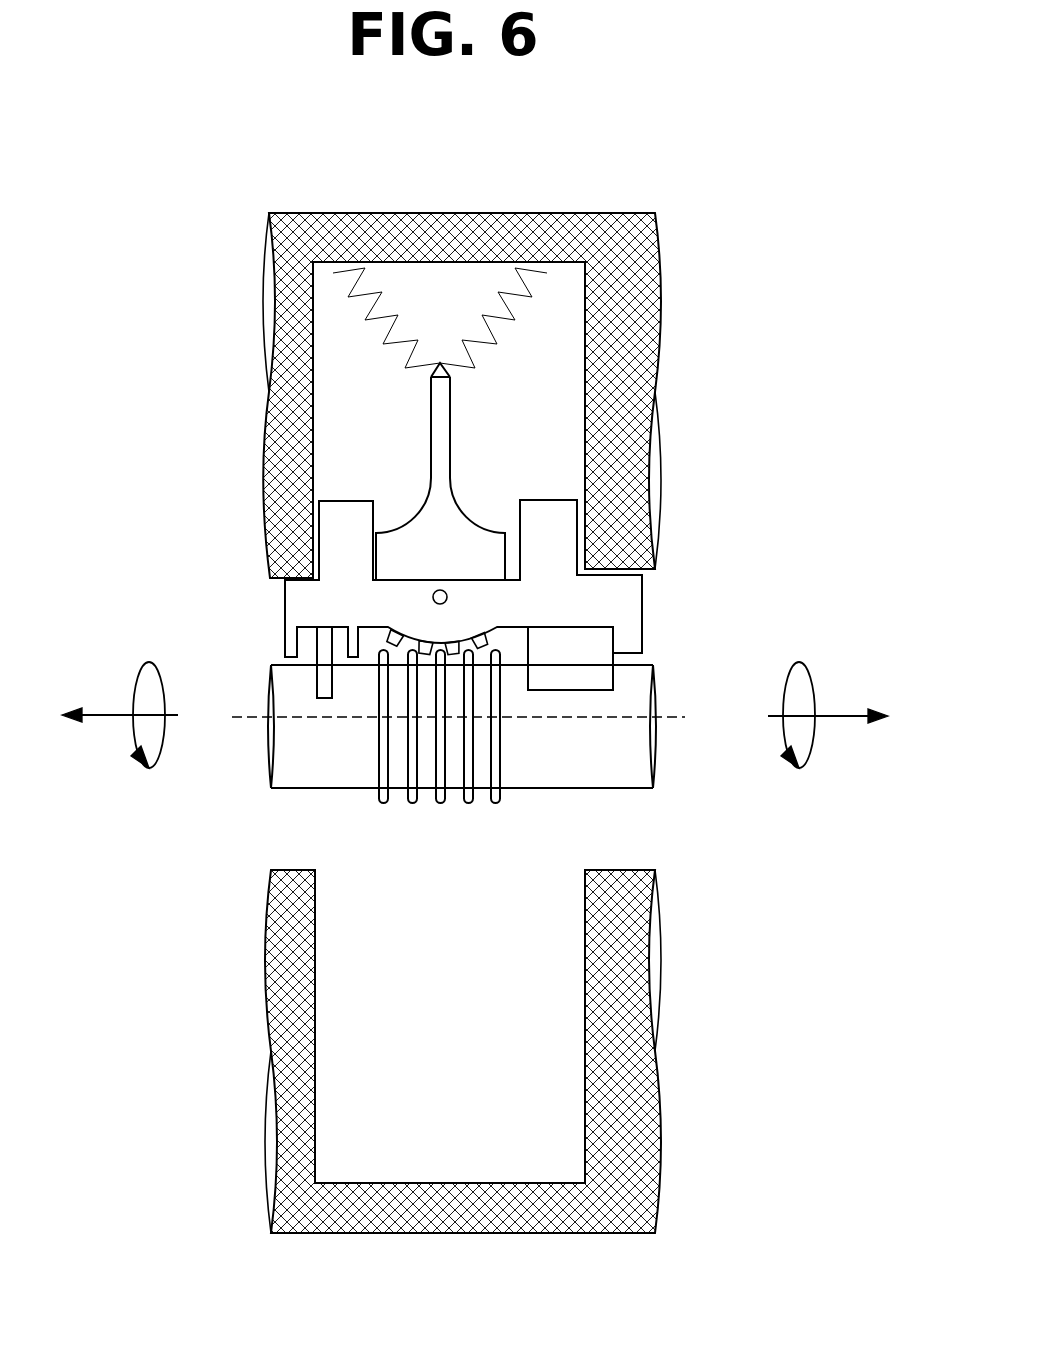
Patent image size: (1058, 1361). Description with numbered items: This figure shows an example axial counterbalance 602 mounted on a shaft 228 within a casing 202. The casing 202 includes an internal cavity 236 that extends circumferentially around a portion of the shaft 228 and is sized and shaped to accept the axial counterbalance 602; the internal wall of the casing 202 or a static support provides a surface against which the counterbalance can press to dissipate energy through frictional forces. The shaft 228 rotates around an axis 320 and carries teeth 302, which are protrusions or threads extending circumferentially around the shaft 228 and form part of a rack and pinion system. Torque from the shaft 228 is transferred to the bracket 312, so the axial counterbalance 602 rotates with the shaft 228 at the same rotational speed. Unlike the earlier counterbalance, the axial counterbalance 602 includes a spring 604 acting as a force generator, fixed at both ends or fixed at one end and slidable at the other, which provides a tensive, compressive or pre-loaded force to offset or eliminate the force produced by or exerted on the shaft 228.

The casing 202 is at (262, 443).
The bracket 312 is at (285, 620).
The spring 604 is at (520, 343).
The axial counterbalance 602 is at (673, 623).
The shaft 228 is at (541, 790).
The teeth 302 is at (445, 803).
The axis 320 is at (245, 717).
The internal cavity 236 is at (452, 1150).